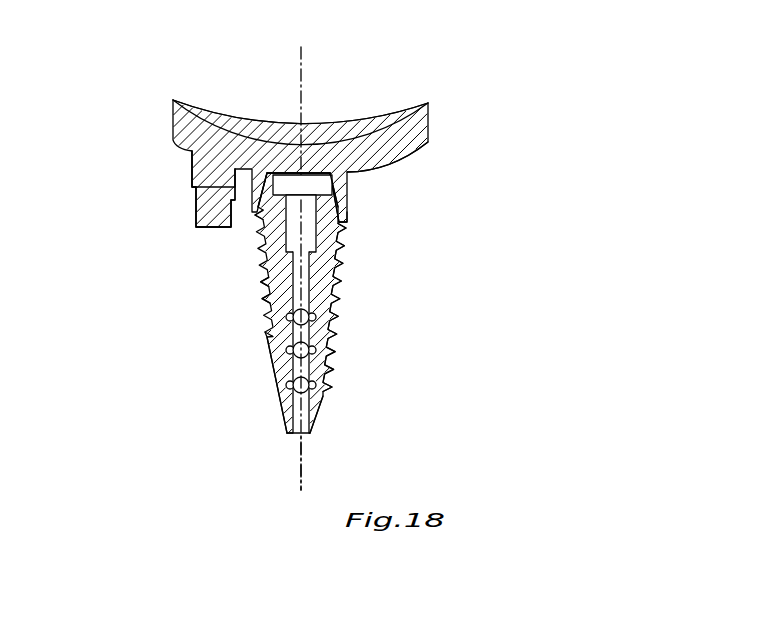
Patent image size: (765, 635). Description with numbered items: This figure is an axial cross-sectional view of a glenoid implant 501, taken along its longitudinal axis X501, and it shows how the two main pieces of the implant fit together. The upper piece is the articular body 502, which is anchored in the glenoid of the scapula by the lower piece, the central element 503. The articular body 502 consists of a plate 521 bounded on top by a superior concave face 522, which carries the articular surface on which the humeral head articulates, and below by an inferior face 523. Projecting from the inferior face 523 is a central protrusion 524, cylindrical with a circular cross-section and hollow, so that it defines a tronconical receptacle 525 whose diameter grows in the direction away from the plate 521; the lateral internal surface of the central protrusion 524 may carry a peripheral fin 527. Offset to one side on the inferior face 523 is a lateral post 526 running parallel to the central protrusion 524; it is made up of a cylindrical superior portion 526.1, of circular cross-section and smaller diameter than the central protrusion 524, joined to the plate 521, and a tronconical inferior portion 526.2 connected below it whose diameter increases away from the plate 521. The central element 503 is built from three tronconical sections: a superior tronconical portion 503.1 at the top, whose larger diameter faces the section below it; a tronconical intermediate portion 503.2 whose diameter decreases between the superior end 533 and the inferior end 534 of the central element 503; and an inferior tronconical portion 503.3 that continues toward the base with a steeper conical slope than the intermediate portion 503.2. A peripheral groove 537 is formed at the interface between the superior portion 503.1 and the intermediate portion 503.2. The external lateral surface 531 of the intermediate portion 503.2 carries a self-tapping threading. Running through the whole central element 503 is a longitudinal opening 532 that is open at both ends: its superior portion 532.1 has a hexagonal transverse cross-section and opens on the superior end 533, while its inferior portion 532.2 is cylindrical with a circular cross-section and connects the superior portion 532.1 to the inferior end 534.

The glenoid implant 501 is at (327, 256).
The articular body 502 is at (306, 164).
The central element 503 is at (366, 256).
The plate 521 is at (415, 130).
The superior concave face 522 is at (357, 103).
The inferior face 523 is at (402, 167).
The central protrusion 524 is at (339, 202).
The tronconical receptacle 525 is at (332, 188).
The lateral post 526 is at (128, 189).
The superior portion 526.1 is at (207, 173).
The tronconical inferior portion 526.2 is at (203, 218).
The peripheral fin 527 is at (348, 222).
The external lateral surface 531 is at (346, 338).
The longitudinal opening 532 is at (281, 444).
The superior portion 532.1 is at (280, 175).
The inferior portion 532.2 is at (262, 302).
The superior end 533 is at (323, 165).
The inferior end 534 is at (333, 422).
The peripheral groove 537 is at (257, 268).
The superior tronconical portion 503.1 is at (260, 207).
The tronconical intermediate portion 503.2 is at (263, 333).
The inferior tronconical portion 503.3 is at (283, 418).
The longitudinal axis X501 is at (312, 256).